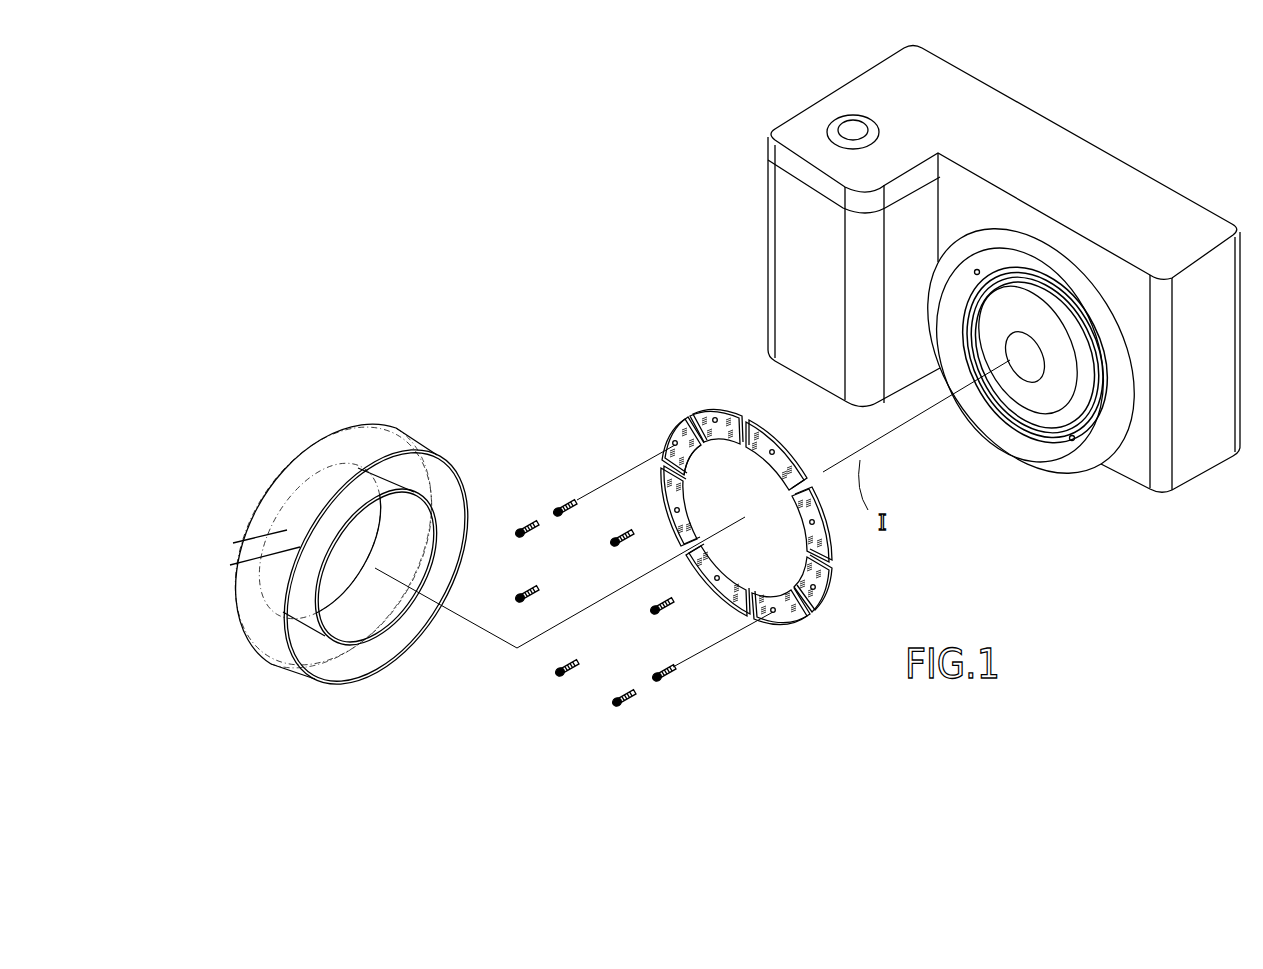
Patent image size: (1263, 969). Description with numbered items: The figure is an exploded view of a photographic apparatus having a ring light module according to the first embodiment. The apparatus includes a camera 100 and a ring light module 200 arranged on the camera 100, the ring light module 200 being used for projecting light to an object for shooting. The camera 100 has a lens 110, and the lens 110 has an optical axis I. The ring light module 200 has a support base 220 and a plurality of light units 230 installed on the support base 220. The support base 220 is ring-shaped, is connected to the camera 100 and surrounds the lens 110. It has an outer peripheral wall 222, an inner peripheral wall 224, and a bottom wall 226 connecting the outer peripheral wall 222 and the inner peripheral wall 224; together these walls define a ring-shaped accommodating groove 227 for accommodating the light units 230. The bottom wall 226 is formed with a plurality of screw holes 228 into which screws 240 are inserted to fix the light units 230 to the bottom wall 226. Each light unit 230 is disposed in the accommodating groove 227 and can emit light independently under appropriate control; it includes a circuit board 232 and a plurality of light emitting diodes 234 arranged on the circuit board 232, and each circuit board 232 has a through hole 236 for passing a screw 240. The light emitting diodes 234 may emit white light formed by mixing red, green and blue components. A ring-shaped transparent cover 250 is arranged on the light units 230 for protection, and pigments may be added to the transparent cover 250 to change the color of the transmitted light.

The camera 100 is at (1068, 157).
The lens 110 is at (1037, 335).
The ring light module 200 is at (1075, 568).
The support base 220 is at (1082, 472).
The outer peripheral wall 222 is at (1033, 463).
The inner peripheral wall 224 is at (1027, 429).
The bottom wall 226 is at (1057, 435).
The accommodating groove 227 is at (977, 410).
The screw holes 228 is at (1070, 442).
The light units 230 is at (708, 475).
The circuit board 232 is at (672, 432).
The light emitting diodes 234 is at (677, 452).
The through hole 236 is at (685, 460).
The screws 240 is at (562, 500).
The transparent cover 250 is at (348, 447).